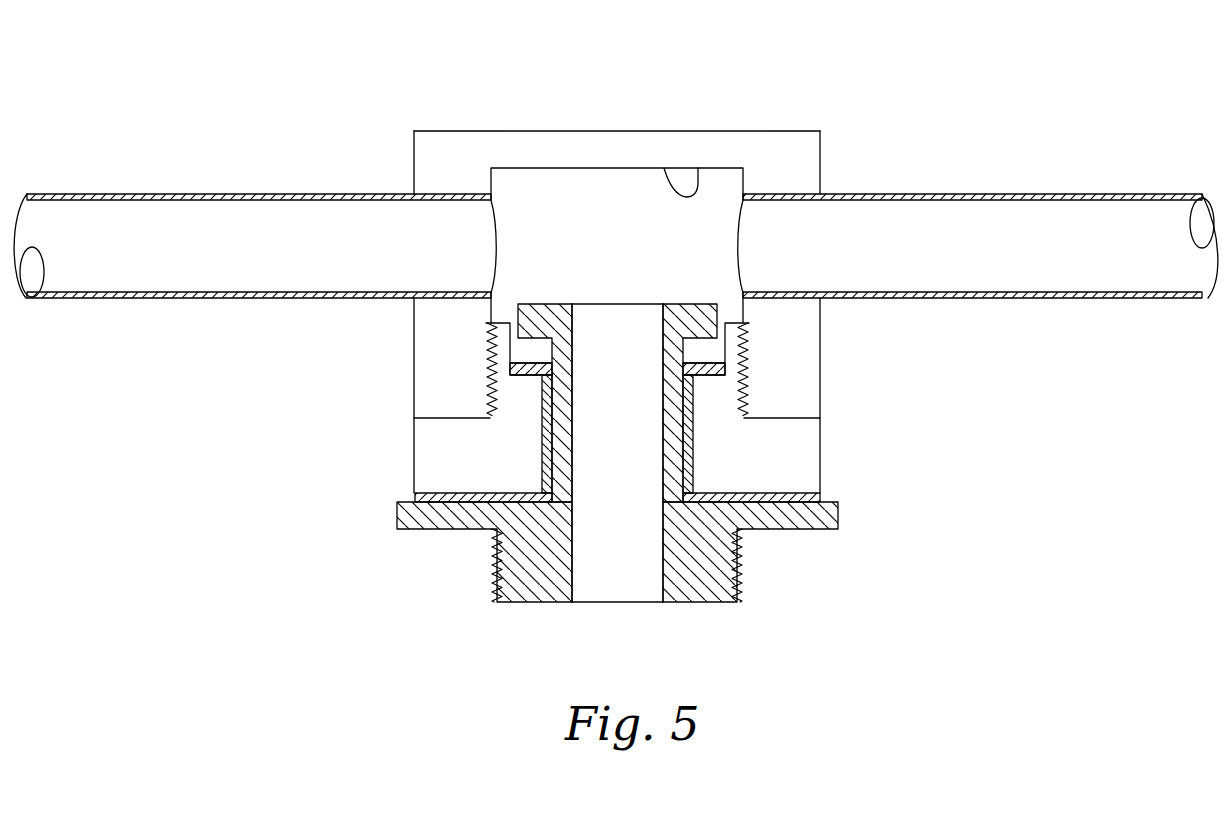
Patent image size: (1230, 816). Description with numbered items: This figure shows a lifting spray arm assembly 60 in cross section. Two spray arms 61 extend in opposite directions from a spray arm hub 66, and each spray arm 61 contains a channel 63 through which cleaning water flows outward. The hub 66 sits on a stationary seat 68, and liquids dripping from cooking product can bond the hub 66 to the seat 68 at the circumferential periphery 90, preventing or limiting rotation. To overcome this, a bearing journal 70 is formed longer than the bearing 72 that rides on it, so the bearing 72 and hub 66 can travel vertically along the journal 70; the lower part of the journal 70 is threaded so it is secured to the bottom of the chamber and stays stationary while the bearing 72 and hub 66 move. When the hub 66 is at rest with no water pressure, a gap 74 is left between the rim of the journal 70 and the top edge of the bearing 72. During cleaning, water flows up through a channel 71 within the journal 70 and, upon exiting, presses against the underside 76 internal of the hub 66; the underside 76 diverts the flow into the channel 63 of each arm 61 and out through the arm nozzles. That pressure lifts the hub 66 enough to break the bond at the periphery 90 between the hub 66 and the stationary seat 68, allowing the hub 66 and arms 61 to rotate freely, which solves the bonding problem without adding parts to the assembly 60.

The spray arm assembly 60 is at (566, 101).
The spray arm 61 is at (197, 194).
The channel 63 is at (230, 258).
The spray arm hub 66 is at (437, 338).
The stationary seat 68 is at (397, 511).
The bearing journal 70 is at (672, 360).
The channel 71 is at (608, 525).
The bearing 72 is at (690, 437).
The gap 74 is at (530, 352).
The underside 76 is at (698, 168).
The circumferential periphery 90 is at (826, 495).